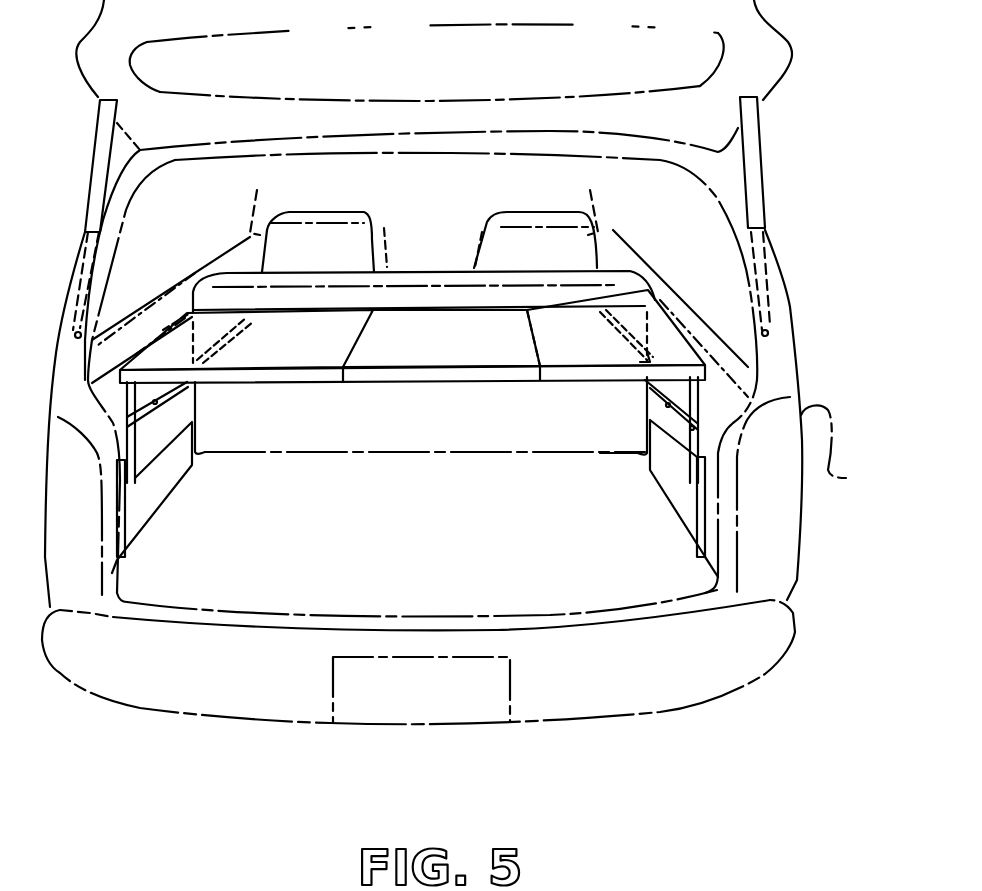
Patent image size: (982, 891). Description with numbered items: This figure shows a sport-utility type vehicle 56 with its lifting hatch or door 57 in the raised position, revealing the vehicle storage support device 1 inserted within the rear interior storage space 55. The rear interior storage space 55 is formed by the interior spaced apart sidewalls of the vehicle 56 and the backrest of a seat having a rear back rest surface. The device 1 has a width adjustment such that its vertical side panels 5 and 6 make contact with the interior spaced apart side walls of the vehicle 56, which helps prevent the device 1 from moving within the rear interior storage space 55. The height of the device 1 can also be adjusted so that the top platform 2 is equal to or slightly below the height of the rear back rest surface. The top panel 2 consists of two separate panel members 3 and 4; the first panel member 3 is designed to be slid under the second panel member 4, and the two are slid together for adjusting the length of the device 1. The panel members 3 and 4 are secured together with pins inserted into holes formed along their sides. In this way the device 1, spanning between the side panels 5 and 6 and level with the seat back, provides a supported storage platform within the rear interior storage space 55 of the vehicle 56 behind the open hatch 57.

The vehicle storage support device 1 is at (412, 305).
The top platform 2 is at (320, 383).
The first panel member 3 is at (270, 383).
The second panel member 4 is at (610, 382).
The vertical side panel 5 is at (196, 403).
The vertical side panel 6 is at (648, 435).
The rear interior storage space 55 is at (290, 592).
The vehicle 56 is at (844, 452).
The lifting hatch or door 57 is at (796, 60).